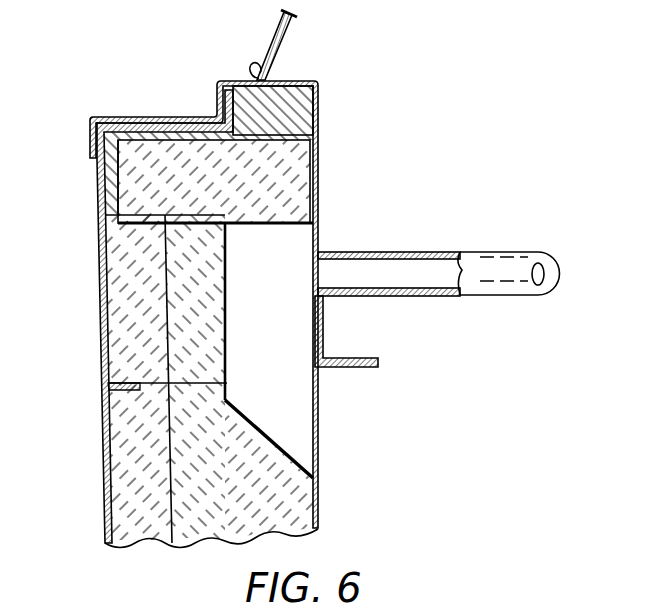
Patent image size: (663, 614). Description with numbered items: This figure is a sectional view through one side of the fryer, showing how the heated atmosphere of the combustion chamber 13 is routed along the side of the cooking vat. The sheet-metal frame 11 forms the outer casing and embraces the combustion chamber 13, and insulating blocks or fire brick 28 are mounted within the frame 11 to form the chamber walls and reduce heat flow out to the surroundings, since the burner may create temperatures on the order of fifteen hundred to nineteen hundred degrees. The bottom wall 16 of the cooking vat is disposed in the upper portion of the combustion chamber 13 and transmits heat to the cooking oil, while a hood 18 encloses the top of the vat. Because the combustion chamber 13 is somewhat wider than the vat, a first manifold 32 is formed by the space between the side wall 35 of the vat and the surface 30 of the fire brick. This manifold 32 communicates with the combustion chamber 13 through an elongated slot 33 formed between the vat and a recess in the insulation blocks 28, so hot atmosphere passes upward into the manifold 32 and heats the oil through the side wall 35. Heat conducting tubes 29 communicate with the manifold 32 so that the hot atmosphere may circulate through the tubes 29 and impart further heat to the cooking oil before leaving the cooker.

The frame 11 is at (100, 331).
The combustion chamber 13 is at (427, 428).
The bottom wall 16 is at (363, 358).
The hood 18 is at (287, 45).
The insulating blocks 28 is at (320, 507).
The heat conducting tubes 29 is at (490, 252).
The surface of the fire brick 30 is at (228, 276).
The first manifold 32 is at (275, 343).
The elongated slot 33 is at (288, 433).
The side wall 35 is at (312, 243).